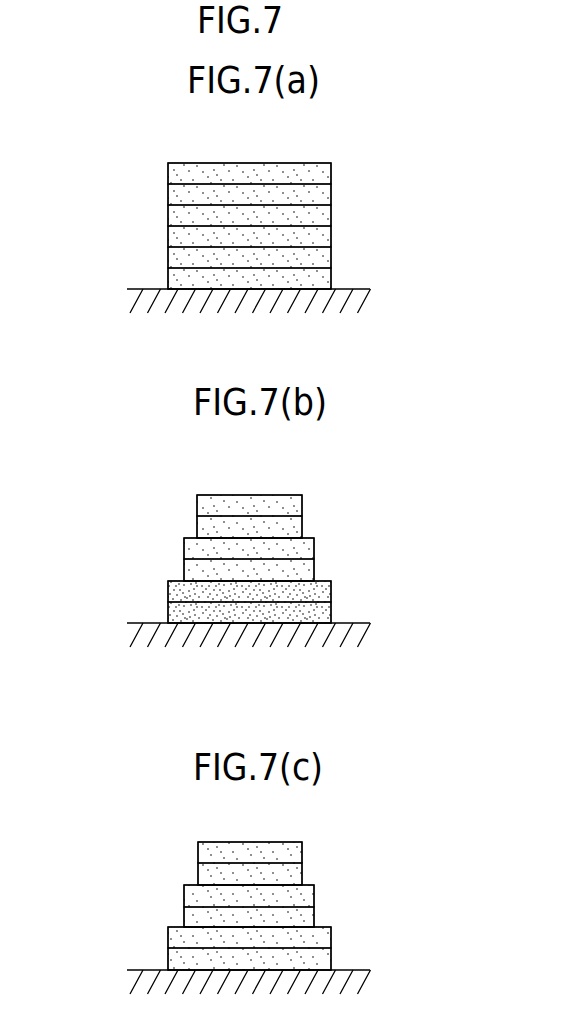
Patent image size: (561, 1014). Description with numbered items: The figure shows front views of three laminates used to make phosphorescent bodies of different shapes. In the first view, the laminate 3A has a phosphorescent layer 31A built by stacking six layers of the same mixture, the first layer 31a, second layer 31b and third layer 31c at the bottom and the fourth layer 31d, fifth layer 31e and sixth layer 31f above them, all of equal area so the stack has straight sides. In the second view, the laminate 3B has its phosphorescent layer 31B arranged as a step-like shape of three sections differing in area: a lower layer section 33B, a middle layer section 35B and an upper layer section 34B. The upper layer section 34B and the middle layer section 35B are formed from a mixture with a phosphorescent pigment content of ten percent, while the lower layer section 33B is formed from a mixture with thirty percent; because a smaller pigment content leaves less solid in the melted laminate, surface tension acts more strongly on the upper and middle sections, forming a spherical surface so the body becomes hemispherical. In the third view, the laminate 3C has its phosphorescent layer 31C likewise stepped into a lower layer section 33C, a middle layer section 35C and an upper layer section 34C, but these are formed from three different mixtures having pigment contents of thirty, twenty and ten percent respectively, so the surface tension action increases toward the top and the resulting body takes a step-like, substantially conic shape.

The laminate 3A is at (347, 169).
The laminate 3B is at (287, 508).
The laminate 3C is at (287, 853).
The phosphorescent layer 31A is at (463, 127).
The phosphorescent layer 31B is at (287, 543).
The phosphorescent layer 31C is at (287, 890).
The first layer 31a is at (331, 278).
The second layer 31b is at (331, 258).
The third layer 31c is at (331, 236).
The fourth layer 31d is at (331, 216).
The fifth layer 31e is at (331, 194).
The sixth layer 31f is at (331, 174).
The lower layer section 33B is at (141, 604).
The upper layer section 34B is at (153, 517).
The middle layer section 35B is at (153, 561).
The lower layer section 33C is at (143, 952).
The upper layer section 34C is at (155, 864).
The middle layer section 35C is at (155, 909).